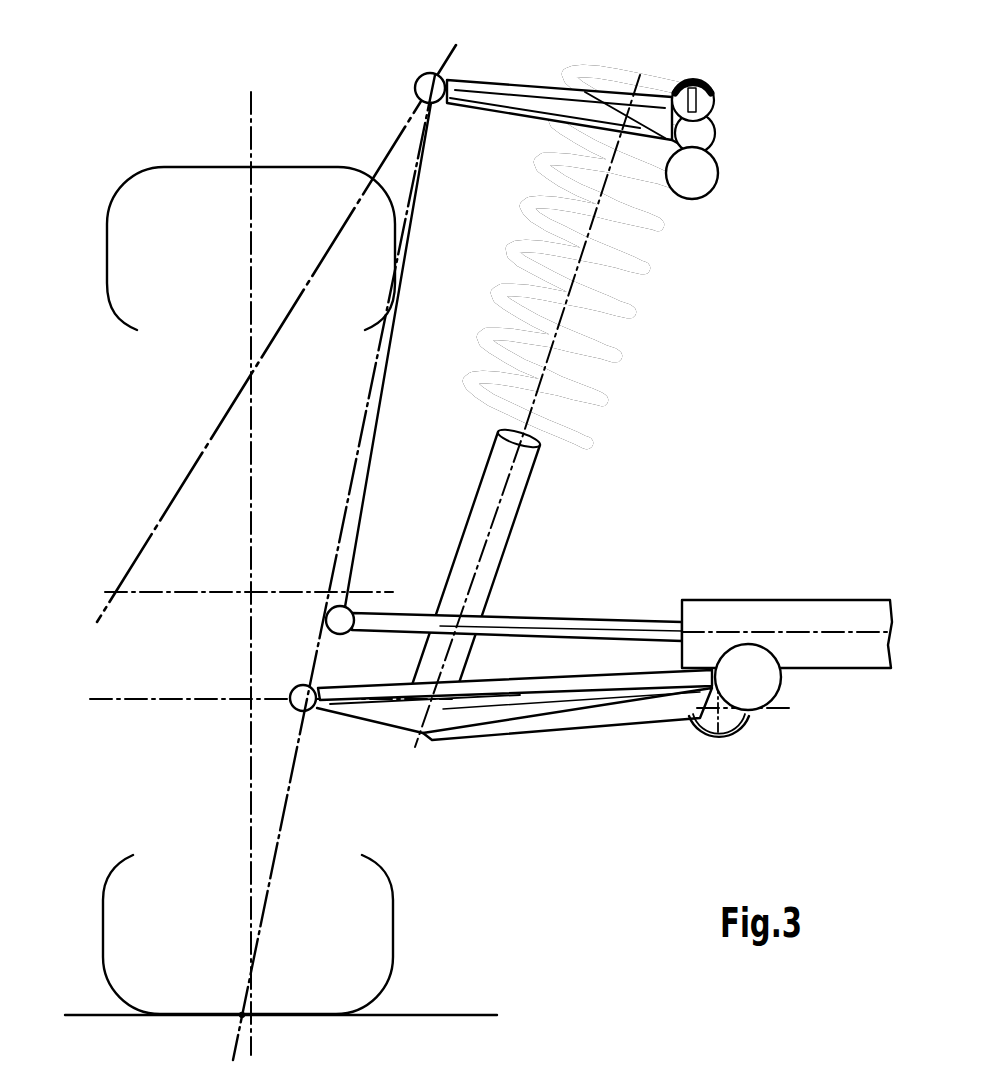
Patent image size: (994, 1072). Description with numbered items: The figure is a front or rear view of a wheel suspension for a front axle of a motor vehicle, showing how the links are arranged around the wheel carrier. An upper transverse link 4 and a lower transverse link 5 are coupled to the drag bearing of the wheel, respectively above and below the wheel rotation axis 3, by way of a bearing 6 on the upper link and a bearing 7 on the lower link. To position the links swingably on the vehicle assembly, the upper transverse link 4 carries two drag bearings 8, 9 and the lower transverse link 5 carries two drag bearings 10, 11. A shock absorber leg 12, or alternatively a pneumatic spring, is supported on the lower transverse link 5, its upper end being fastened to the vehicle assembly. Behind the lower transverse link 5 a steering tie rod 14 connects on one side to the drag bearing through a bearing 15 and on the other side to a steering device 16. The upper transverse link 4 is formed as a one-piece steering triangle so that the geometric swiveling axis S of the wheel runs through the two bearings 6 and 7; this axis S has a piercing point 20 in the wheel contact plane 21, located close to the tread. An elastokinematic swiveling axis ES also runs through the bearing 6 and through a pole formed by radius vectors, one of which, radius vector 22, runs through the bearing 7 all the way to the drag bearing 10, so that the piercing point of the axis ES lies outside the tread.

The wheel rotation axis 3 is at (277, 588).
The upper transverse link 4 is at (509, 83).
The lower transverse link 5 is at (483, 742).
The bearing 6 is at (428, 72).
The bearing 7 is at (300, 710).
The drag bearing 8 is at (722, 104).
The drag bearing 9 is at (697, 184).
The drag bearing 10 is at (712, 726).
The drag bearing 11 is at (757, 700).
The shock absorber leg 12 is at (630, 396).
The steering tie rod 14 is at (546, 620).
The bearing 15 is at (352, 612).
The steering device 16 is at (733, 610).
The piercing point 20 is at (240, 1012).
The wheel contact plane 21 is at (454, 1013).
The radius vector 22 is at (172, 703).
The elastokinematic swiveling axis ES is at (262, 364).
The geometric swiveling axis S is at (288, 808).